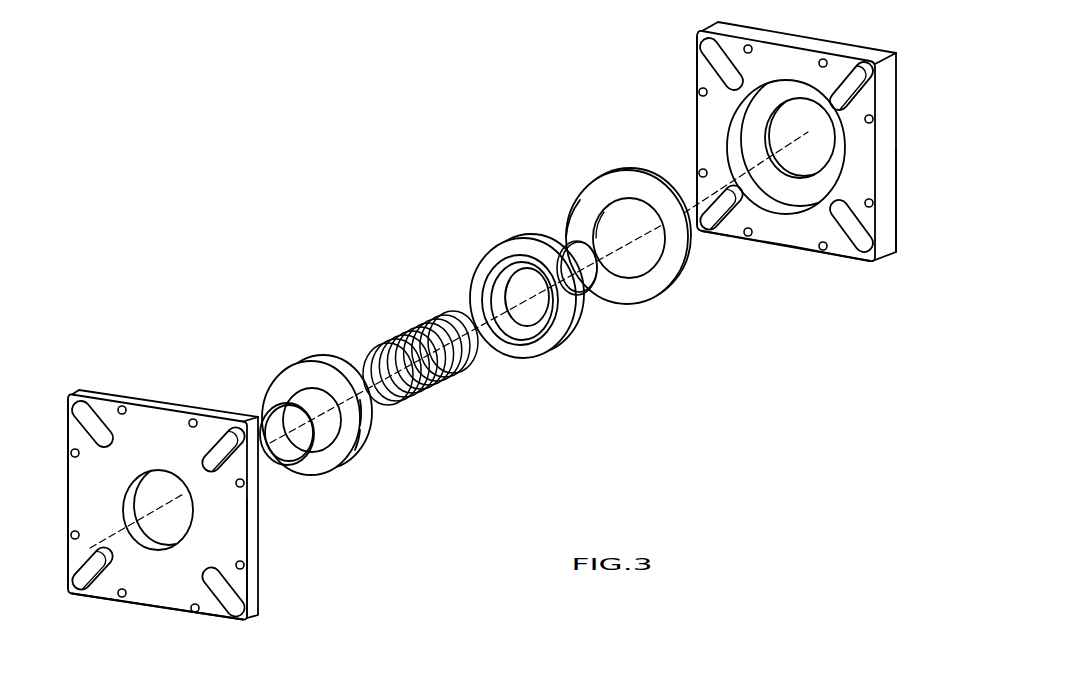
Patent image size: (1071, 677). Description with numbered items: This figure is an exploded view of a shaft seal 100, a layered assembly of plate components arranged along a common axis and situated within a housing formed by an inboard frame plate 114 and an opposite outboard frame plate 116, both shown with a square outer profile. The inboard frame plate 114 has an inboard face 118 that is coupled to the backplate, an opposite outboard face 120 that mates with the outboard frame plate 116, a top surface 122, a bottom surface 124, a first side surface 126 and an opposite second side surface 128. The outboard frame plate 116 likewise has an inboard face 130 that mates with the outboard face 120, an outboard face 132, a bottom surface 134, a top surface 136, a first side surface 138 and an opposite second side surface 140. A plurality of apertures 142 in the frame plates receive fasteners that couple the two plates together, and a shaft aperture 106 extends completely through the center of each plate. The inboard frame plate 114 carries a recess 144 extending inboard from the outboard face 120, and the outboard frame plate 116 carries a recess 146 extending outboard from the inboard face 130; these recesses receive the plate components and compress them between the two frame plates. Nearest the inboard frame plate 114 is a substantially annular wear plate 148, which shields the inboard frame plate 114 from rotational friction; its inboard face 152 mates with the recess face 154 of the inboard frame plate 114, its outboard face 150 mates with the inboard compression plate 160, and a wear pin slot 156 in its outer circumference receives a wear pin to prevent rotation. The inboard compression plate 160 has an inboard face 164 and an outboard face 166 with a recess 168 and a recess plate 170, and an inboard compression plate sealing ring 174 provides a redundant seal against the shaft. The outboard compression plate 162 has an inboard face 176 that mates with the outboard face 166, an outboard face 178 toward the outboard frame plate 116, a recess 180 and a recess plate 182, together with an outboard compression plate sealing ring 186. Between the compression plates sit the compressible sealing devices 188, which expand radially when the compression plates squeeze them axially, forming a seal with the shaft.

The shaft seal 100 is at (238, 210).
The shaft aperture 106 is at (145, 497).
The inboard frame plate 114 is at (703, 32).
The outboard frame plate 116 is at (85, 388).
The inboard face 118 is at (897, 235).
The outboard face 120 is at (800, 235).
The top surface 122 is at (857, 53).
The bottom surface 124 is at (840, 260).
The first side surface 126 is at (693, 117).
The second side surface 128 is at (888, 117).
The inboard face 130 is at (258, 597).
The outboard face 132 is at (72, 502).
The bottom surface 134 is at (97, 603).
The top surface 136 is at (142, 402).
The first side surface 138 is at (67, 442).
The second side surface 140 is at (255, 513).
The apertures 142 is at (195, 422).
The recess 144 is at (750, 108).
The recess 146 is at (260, 532).
The wear plate 148 is at (610, 173).
The outboard face 150 is at (577, 205).
The inboard face 152 is at (665, 298).
The recess face 154 is at (753, 157).
The wear pin slot 156 is at (678, 277).
The inboard compression plate 160 is at (515, 242).
The outboard compression plate 162 is at (310, 360).
The inboard face 164 is at (585, 322).
The outboard face 166 is at (477, 270).
The recess 168 is at (497, 297).
The recess plate 170 is at (518, 330).
The inboard compression plate sealing ring 174 is at (590, 292).
The inboard face 176 is at (372, 443).
The outboard face 178 is at (282, 379).
The recess 180 is at (373, 427).
The recess plate 182 is at (372, 410).
The outboard compression plate sealing ring 186 is at (293, 463).
The sealing devices 188 is at (472, 362).